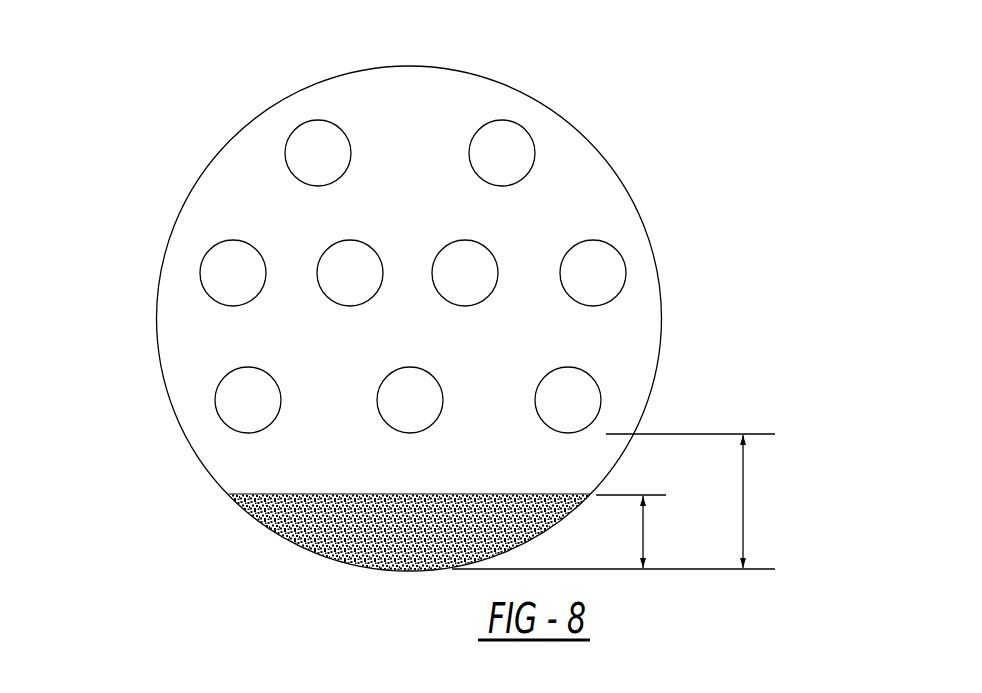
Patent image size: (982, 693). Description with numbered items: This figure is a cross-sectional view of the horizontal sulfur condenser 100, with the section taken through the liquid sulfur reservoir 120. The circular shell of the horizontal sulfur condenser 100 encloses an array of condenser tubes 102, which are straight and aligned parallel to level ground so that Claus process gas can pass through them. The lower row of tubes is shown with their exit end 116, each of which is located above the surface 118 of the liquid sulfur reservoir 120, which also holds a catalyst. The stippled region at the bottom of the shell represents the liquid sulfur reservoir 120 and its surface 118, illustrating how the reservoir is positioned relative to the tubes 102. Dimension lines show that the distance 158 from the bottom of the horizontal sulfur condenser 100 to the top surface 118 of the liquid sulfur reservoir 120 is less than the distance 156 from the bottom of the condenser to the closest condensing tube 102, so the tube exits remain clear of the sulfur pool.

The horizontal sulfur condenser 100 is at (593, 147).
The condenser tubes 102 is at (306, 121).
The exit end of condenser tube 116 is at (266, 414).
The surface of liquid sulfur reservoir 118 is at (283, 494).
The liquid sulfur reservoir 120 is at (368, 542).
The distance from condenser bottom to closest condensing tube 156 is at (743, 500).
The distance from condenser bottom to reservoir surface 158 is at (643, 533).